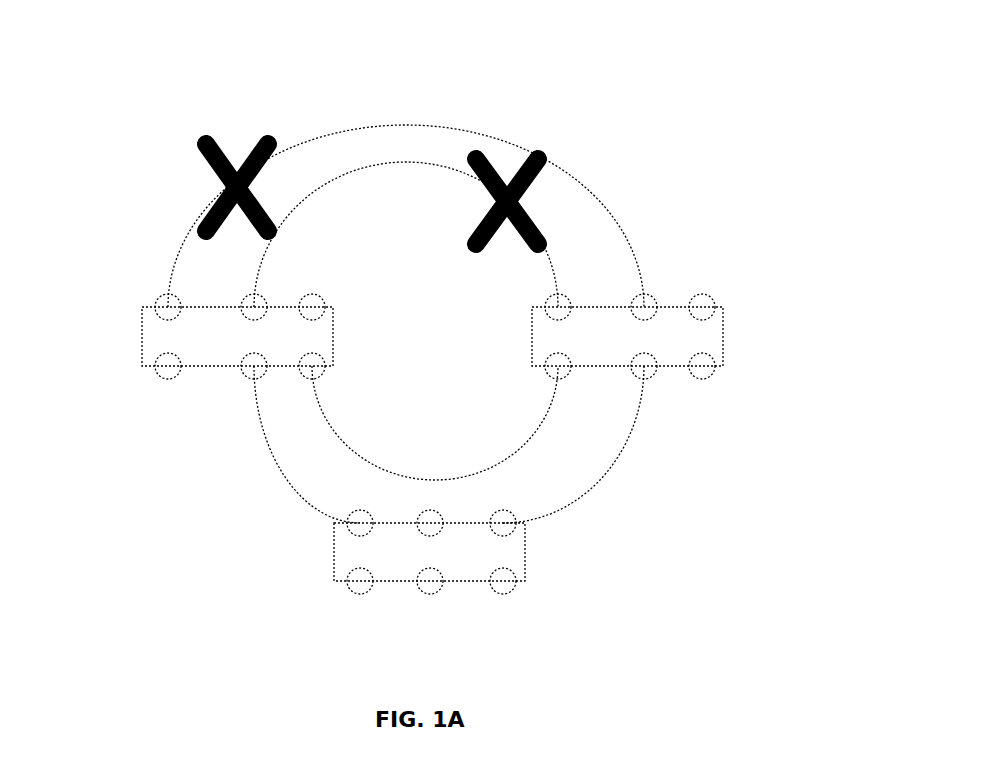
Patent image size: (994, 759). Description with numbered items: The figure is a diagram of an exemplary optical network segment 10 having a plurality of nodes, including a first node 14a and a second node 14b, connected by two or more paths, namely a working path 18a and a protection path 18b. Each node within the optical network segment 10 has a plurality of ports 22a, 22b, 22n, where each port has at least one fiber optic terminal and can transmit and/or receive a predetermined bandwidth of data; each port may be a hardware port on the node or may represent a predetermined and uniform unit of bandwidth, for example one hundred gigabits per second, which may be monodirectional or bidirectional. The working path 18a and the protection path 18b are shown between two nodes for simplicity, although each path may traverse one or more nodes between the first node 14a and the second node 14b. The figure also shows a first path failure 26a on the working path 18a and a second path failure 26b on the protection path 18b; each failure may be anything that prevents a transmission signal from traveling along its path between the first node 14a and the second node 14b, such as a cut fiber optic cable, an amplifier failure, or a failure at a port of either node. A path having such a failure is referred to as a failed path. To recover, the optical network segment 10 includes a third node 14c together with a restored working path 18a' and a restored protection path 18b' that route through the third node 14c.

The optical network segment 10 is at (678, 58).
The first node 14a is at (128, 343).
The second node 14b is at (670, 297).
The third node 14c is at (382, 582).
The working path 18a is at (406, 234).
The protection path 18b is at (406, 176).
The restored working path 18a' is at (435, 423).
The restored protection path 18b' is at (420, 468).
The port 22a is at (167, 380).
The port 22b is at (263, 377).
The port 22n is at (325, 297).
The first path failure 26a is at (537, 152).
The second path failure 26b is at (193, 140).